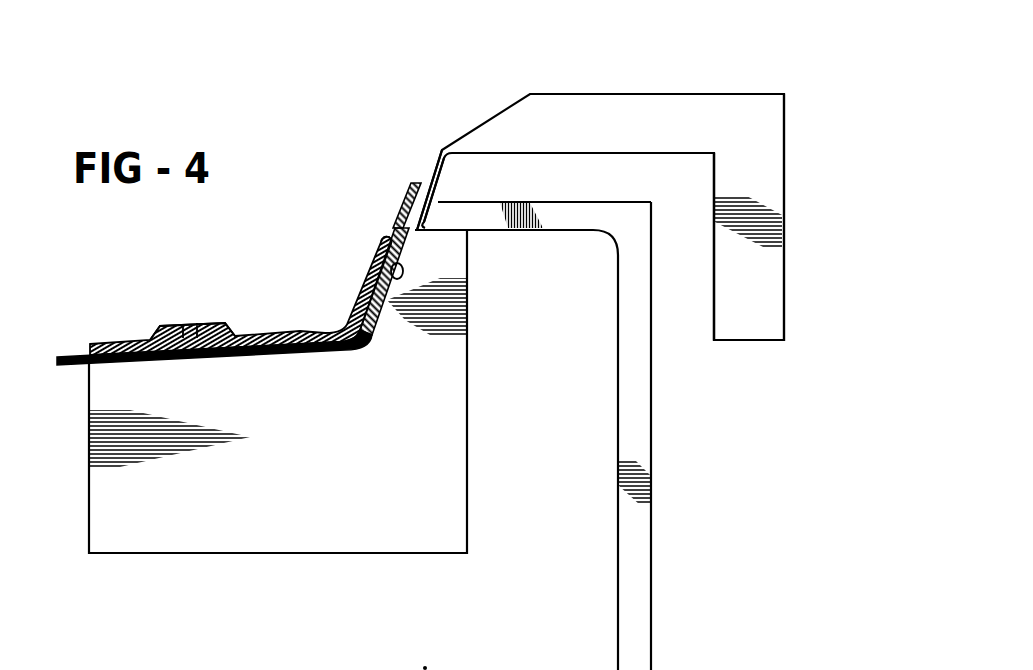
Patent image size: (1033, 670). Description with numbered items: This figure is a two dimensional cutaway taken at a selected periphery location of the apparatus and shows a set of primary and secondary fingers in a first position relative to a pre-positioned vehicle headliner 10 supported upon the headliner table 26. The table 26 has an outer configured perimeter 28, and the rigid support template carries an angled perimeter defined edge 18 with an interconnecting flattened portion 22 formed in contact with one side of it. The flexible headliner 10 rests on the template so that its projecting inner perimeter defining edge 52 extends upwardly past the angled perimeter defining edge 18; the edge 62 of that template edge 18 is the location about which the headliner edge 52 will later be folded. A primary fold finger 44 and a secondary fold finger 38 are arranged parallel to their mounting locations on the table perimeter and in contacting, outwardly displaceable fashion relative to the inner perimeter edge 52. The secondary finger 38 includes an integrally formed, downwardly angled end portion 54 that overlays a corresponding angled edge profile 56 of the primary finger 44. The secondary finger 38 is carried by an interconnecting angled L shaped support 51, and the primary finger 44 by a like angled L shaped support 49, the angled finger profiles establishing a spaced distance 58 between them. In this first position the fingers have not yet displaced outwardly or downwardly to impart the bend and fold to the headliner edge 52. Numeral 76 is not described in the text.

The vehicle headliner 10 is at (372, 266).
The angled perimeter defined edge 18 is at (358, 295).
The flattened portion 22 is at (178, 321).
The headliner table 26 is at (138, 262).
The outer configured perimeter 28 is at (363, 328).
The secondary fold finger 38 is at (545, 108).
The primary fold finger 44 is at (577, 224).
The angled L shaped support 49 is at (642, 422).
The angled L shaped support 51 is at (770, 285).
The inner perimeter defining edge 52 is at (408, 197).
The downwardly angled end portion 54 is at (425, 176).
The angled edge profile 56 is at (417, 231).
The spaced distance 58 is at (692, 198).
The edge 62 is at (388, 233).
The panel 76 is at (484, 661).